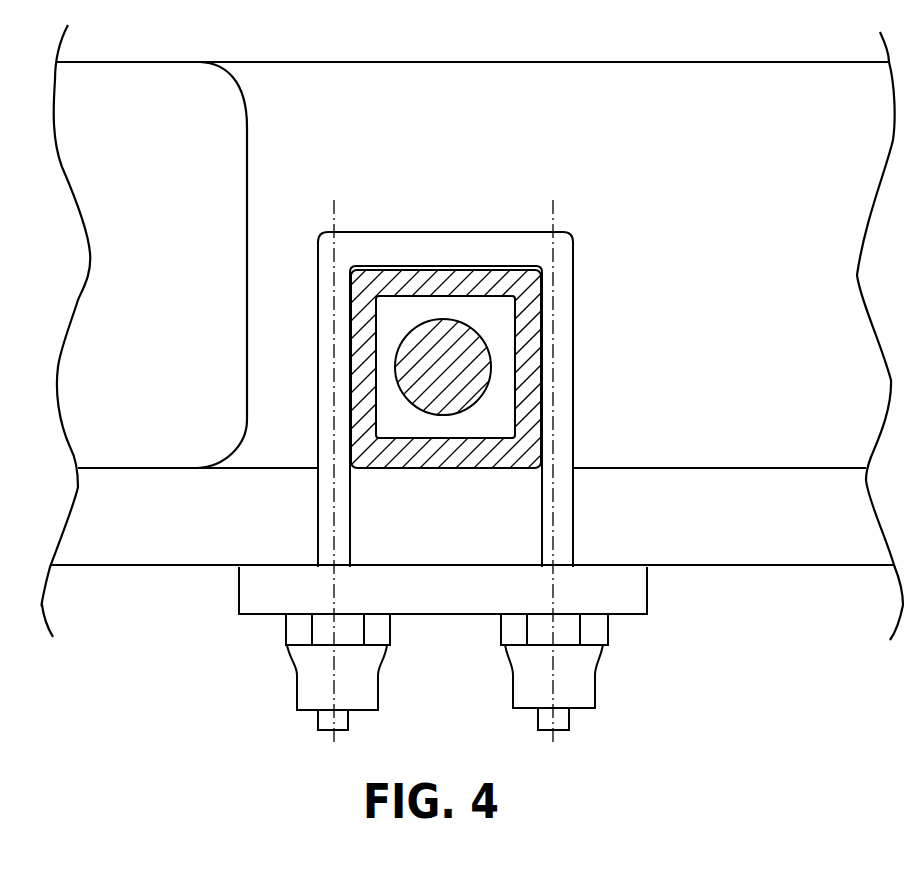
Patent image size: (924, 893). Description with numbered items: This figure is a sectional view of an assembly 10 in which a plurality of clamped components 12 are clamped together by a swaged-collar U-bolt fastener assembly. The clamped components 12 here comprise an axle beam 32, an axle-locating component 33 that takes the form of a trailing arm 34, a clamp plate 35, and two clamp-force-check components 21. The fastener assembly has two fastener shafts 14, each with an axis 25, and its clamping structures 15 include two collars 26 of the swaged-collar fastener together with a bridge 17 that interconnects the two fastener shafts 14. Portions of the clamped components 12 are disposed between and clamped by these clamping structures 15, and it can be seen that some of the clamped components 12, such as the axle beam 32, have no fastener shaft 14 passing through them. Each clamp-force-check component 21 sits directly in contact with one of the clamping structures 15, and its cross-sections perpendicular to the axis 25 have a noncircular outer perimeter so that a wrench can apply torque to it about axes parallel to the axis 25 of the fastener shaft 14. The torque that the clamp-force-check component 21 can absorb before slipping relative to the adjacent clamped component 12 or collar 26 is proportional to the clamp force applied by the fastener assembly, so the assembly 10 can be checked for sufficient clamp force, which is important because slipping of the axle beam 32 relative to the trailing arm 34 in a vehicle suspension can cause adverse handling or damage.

The assembly 10 is at (466, 410).
The clamped components 12 is at (466, 317).
The fastener shaft 14 is at (565, 326).
The clamping structures 15 is at (379, 672).
The bridge 17 is at (433, 253).
The clamp-force-check component 21 is at (282, 640).
The axis 25 is at (558, 224).
The collars 26 is at (527, 675).
The axle beam 32 is at (398, 277).
The axle-locating component 33 is at (696, 493).
The trailing arm 34 is at (744, 475).
The clamp plate 35 is at (275, 588).